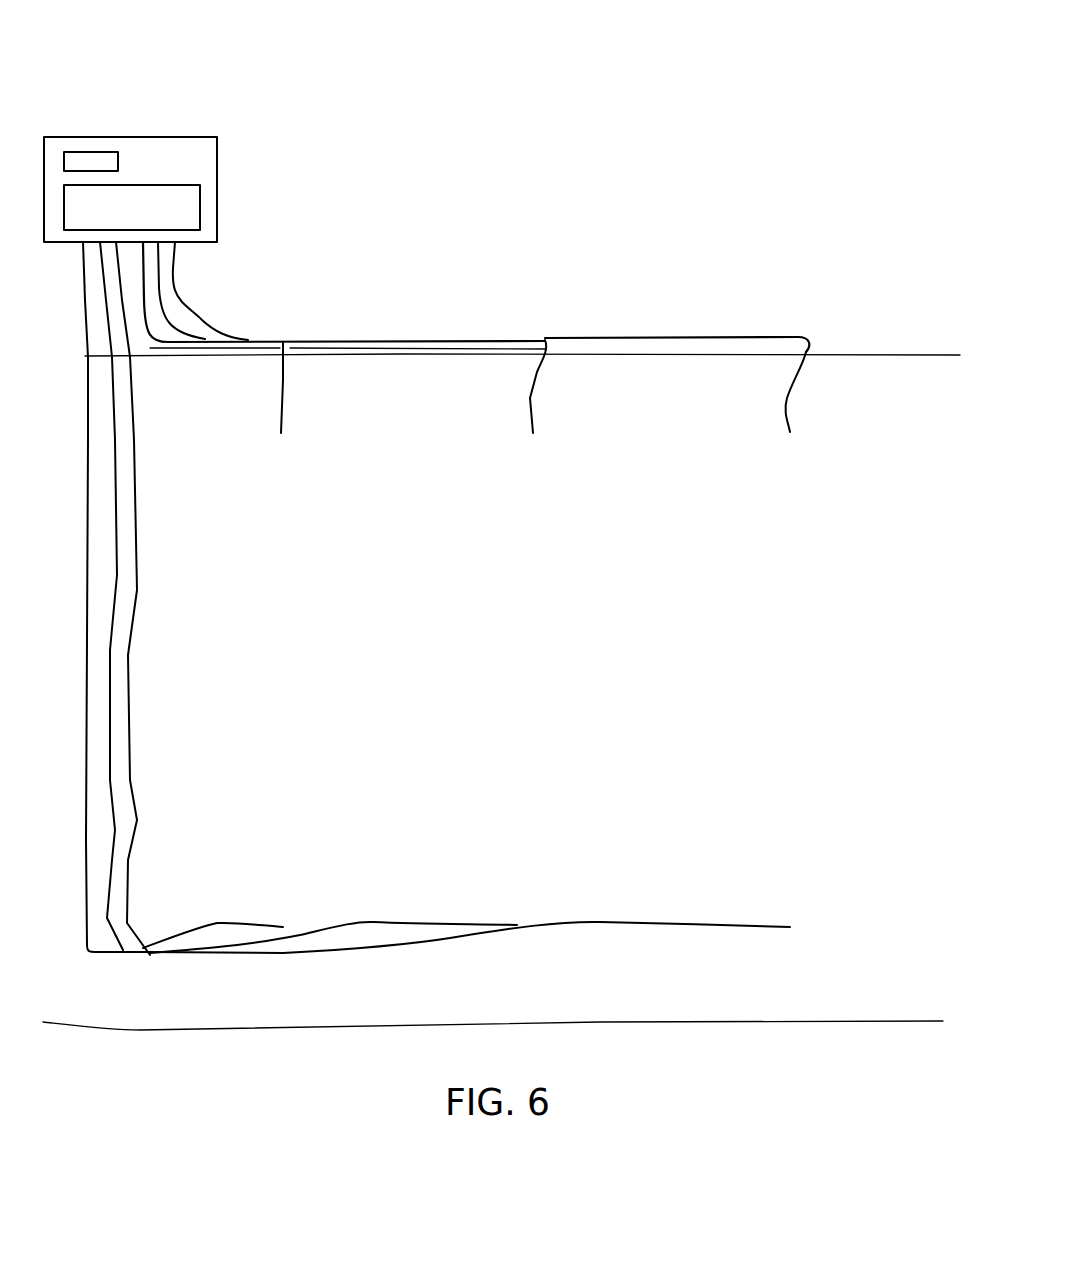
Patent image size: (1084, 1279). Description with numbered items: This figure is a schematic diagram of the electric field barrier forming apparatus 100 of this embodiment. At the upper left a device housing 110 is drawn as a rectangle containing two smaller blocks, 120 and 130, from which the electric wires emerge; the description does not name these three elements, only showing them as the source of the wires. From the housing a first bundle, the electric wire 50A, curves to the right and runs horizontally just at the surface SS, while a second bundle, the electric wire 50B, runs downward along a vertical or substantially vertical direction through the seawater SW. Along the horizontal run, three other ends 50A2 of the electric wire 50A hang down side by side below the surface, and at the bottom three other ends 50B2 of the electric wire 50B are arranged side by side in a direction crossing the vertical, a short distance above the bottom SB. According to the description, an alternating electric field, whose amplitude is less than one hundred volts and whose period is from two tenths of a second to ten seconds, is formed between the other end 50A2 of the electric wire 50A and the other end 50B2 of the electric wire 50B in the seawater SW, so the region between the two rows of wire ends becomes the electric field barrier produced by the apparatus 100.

The electric field barrier forming apparatus 100 is at (402, 98).
The measurement device / controller 110 is at (218, 178).
The power supply unit 120 is at (92, 158).
The control unit 130 is at (150, 185).
The electric wire 50A is at (224, 302).
The electric wire 50B is at (143, 617).
The other end of the electric wire 50A2 is at (280, 430).
The other end of the electric wire 50B2 is at (285, 926).
The snow surface SS is at (922, 355).
The seawater SW is at (895, 617).
The snow bottom / ground surface SB is at (870, 1018).